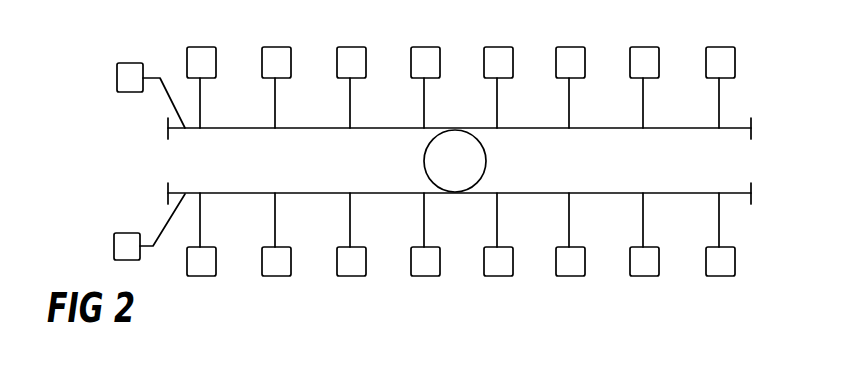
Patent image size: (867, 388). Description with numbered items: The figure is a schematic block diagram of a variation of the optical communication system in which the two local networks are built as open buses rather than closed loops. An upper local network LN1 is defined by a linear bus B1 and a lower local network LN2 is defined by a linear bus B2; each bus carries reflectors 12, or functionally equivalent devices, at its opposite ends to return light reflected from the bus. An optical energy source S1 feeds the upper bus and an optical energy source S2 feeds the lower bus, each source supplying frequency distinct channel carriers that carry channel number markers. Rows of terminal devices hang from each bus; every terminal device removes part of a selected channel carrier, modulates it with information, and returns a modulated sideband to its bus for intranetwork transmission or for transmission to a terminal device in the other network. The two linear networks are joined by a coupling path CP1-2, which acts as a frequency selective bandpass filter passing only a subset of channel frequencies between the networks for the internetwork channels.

The reflectors 12 is at (168, 128).
The optical energy source S1 is at (117, 76).
The optical energy source S2 is at (114, 246).
The coupling path CP1-2 is at (485, 157).
The linear bus B1 is at (235, 129).
The linear bus B2 is at (686, 192).
The local network LN1 is at (599, 128).
The local network LN2 is at (377, 193).